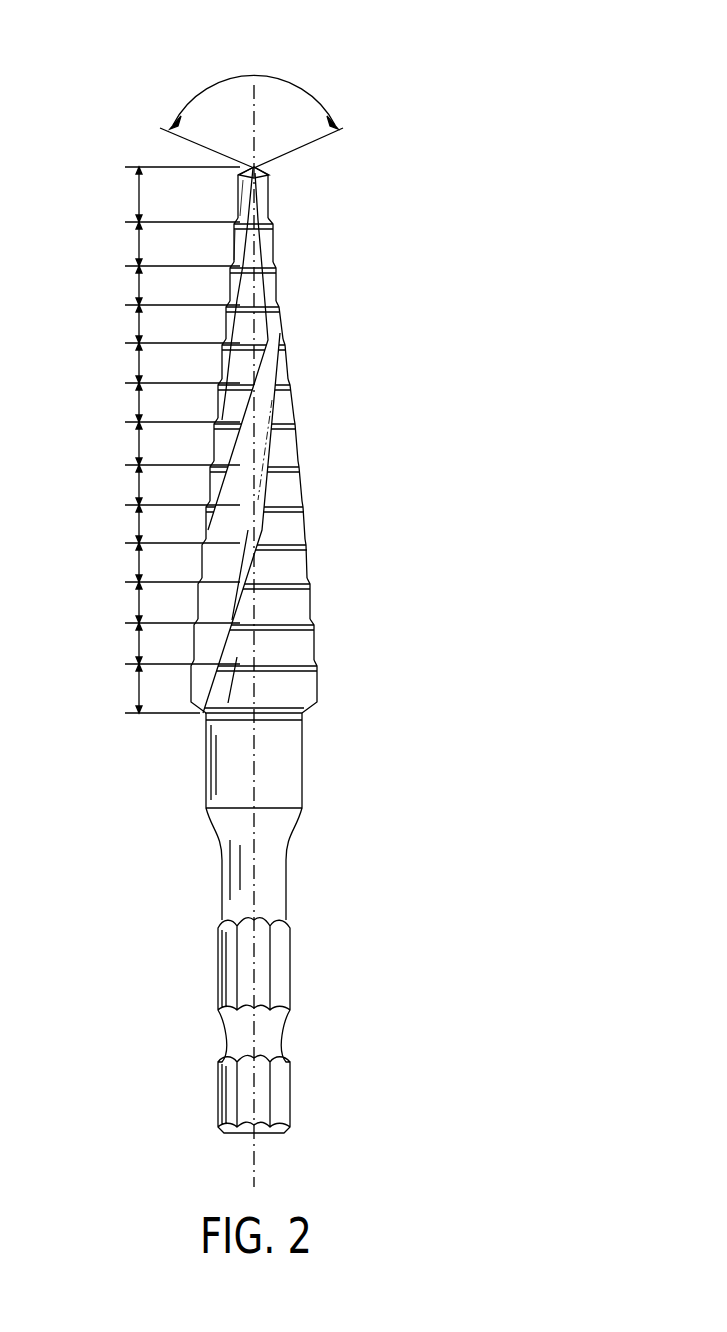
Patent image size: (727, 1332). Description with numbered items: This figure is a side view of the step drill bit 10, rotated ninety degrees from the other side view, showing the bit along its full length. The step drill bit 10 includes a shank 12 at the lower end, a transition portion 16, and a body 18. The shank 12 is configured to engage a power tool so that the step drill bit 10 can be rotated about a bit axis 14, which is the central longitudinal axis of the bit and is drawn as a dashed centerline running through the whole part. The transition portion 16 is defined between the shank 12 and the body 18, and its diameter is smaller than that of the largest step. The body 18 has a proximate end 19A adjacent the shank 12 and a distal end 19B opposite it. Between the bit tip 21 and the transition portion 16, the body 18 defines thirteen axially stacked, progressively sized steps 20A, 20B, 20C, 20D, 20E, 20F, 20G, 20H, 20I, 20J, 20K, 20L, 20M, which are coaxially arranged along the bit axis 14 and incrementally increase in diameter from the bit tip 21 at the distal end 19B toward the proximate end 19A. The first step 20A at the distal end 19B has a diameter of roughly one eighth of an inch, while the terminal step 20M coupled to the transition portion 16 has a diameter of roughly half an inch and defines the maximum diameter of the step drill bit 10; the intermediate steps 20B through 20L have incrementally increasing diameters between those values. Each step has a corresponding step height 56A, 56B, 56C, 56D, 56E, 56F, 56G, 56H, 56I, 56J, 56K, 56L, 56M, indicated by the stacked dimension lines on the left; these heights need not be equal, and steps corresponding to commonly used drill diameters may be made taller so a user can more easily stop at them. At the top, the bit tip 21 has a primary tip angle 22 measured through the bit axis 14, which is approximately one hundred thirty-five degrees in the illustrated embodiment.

The step drill bit 10 is at (484, 203).
The shank 12 is at (285, 990).
The bit axis 14 is at (254, 1162).
The transition portion 16 is at (290, 778).
The body 18 is at (408, 438).
The proximate end 19A is at (195, 720).
The distal end 19B is at (357, 63).
The bit tip 21 is at (262, 172).
The primary tip angle 22 is at (254, 76).
The first step 20A is at (270, 190).
The intermediate step 20B is at (276, 236).
The intermediate step 20C is at (278, 276).
The intermediate step 20D is at (284, 318).
The intermediate step 20E is at (288, 358).
The intermediate step 20F is at (292, 398).
The intermediate step 20G is at (296, 440).
The intermediate step 20H is at (300, 482).
The intermediate step 20I is at (304, 520).
The intermediate step 20J is at (308, 562).
The intermediate step 20K is at (312, 601).
The intermediate step 20L is at (316, 640).
The terminal step 20M is at (318, 682).
The step height 56A is at (138, 196).
The step height 56B is at (138, 243).
The step height 56C is at (138, 285).
The step height 56D is at (138, 325).
The step height 56E is at (138, 365).
The step height 56F is at (138, 405).
The step height 56G is at (138, 446).
The step height 56H is at (138, 488).
The step height 56I is at (138, 526).
The step height 56J is at (138, 568).
The step height 56K is at (138, 607).
The step height 56L is at (138, 644).
The step height 56M is at (138, 690).